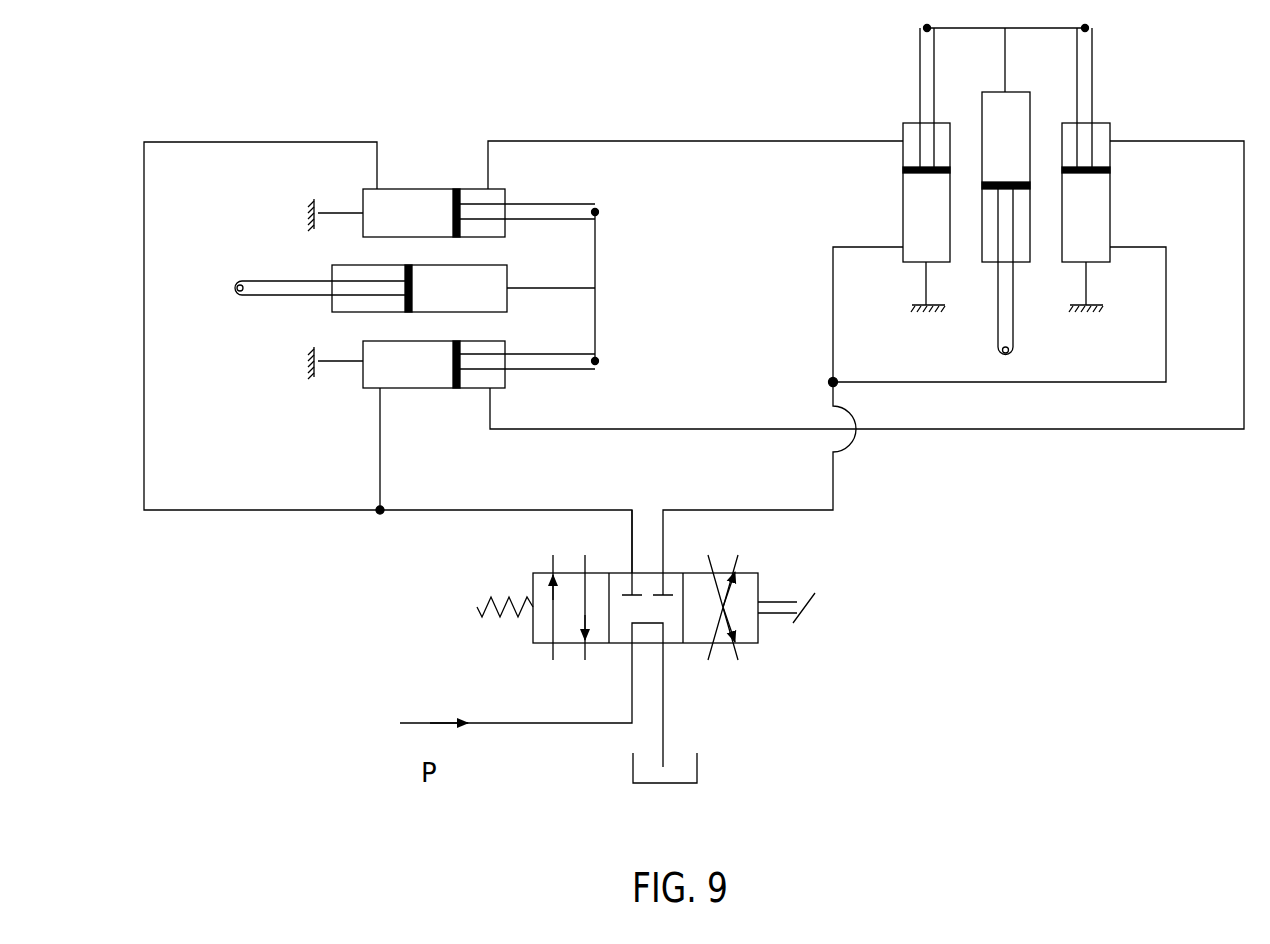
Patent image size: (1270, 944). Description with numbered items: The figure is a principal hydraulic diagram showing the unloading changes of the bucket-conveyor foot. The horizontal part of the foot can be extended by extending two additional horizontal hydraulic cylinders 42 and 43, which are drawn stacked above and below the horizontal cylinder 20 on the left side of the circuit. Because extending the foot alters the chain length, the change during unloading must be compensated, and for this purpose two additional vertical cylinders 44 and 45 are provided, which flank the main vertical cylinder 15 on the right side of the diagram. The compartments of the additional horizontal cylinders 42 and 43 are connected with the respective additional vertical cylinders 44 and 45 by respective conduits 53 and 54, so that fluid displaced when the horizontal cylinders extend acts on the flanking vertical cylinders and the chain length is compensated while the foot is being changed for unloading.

The vertical cylinder 15 is at (1003, 121).
The cylinder 20 is at (339, 304).
The hydraulic cylinder 42 is at (412, 205).
The hydraulic cylinder 43 is at (411, 368).
The vertical cylinder 44 is at (920, 213).
The vertical cylinder 45 is at (1097, 215).
The conduit 53 is at (572, 136).
The conduit 54 is at (938, 432).